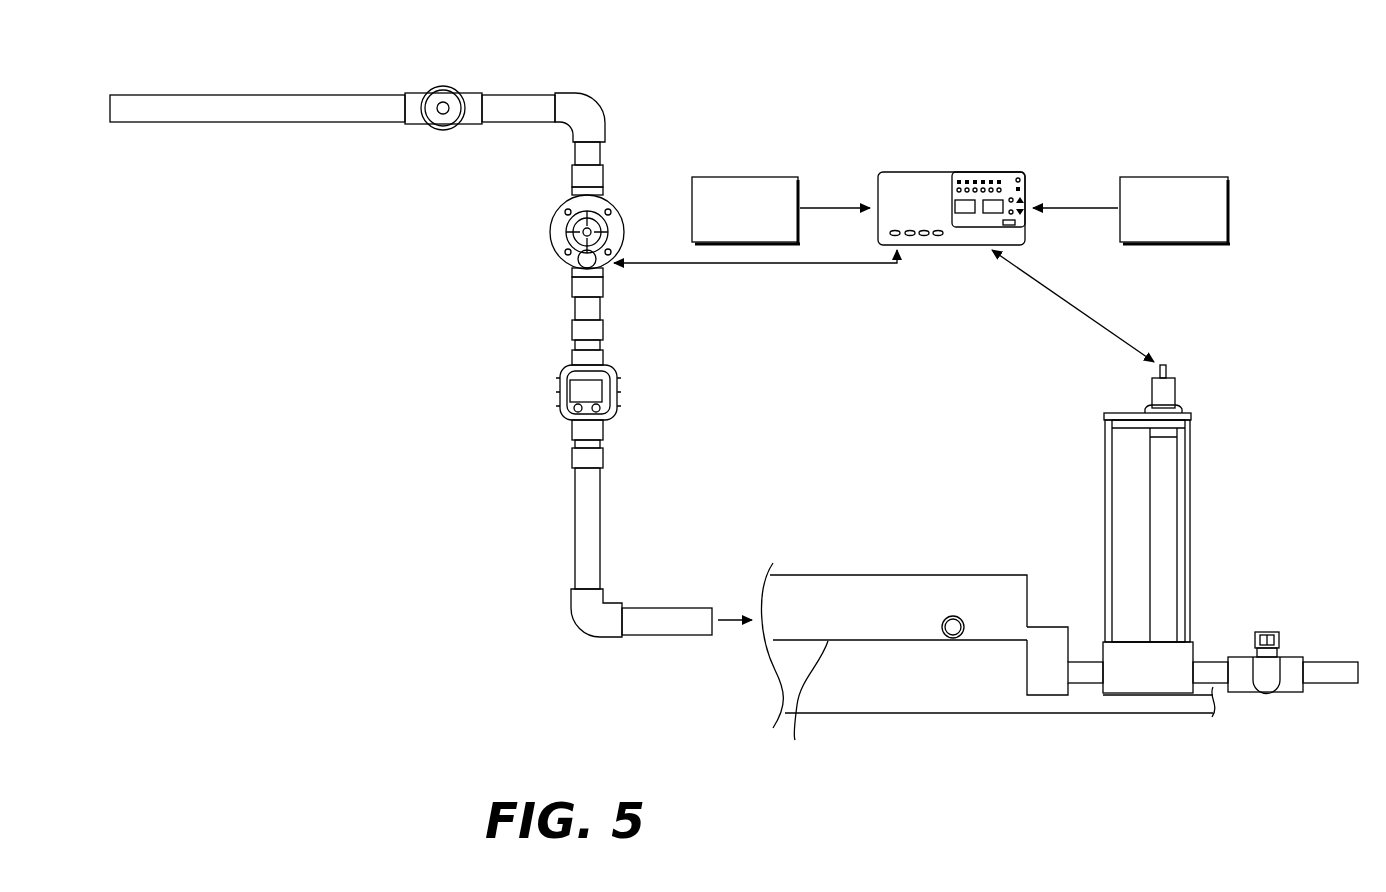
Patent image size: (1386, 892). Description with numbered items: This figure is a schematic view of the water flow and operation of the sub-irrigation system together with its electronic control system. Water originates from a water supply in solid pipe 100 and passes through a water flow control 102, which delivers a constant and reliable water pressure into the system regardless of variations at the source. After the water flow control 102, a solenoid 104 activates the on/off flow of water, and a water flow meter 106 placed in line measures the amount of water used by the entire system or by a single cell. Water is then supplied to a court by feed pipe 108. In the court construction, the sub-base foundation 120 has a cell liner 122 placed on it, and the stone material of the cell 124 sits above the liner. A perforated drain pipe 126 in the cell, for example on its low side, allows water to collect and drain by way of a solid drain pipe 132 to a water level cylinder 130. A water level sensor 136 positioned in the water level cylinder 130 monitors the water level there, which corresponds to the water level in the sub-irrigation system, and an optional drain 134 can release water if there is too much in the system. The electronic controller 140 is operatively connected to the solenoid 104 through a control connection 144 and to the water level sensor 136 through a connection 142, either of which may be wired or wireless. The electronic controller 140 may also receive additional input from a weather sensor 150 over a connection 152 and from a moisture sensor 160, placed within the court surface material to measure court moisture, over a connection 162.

The solid pipe 100 is at (247, 110).
The water flow control 102 is at (412, 94).
The solenoid 104 is at (625, 222).
The water flow meter 106 is at (560, 373).
The feed pipe 108 is at (658, 622).
The sub-base foundation 120 is at (867, 683).
The cell liner 122 is at (805, 705).
The cell 124 is at (822, 605).
The drain pipe 126 is at (968, 626).
The water level cylinder 130 is at (1190, 472).
The solid drain pipe 132 is at (1083, 687).
The drain 134 is at (1340, 688).
The water level sensor 136 is at (1167, 393).
The electronic controller 140 is at (930, 172).
The sensor signal line 142 is at (1068, 302).
The solenoid control line 144 is at (758, 265).
The weather sensor 150 is at (1218, 177).
The weather sensor signal line 152 is at (1077, 210).
The moisture sensor 160 is at (694, 177).
The moisture sensor signal line 162 is at (838, 208).